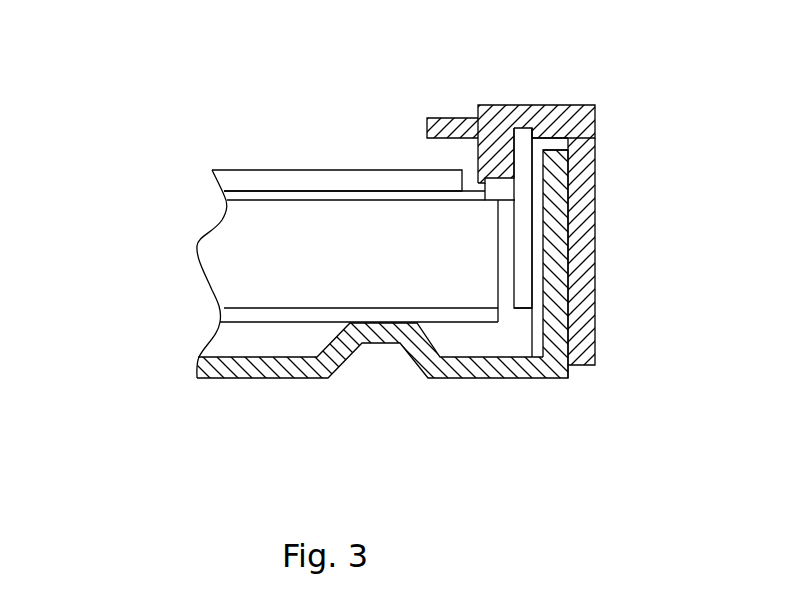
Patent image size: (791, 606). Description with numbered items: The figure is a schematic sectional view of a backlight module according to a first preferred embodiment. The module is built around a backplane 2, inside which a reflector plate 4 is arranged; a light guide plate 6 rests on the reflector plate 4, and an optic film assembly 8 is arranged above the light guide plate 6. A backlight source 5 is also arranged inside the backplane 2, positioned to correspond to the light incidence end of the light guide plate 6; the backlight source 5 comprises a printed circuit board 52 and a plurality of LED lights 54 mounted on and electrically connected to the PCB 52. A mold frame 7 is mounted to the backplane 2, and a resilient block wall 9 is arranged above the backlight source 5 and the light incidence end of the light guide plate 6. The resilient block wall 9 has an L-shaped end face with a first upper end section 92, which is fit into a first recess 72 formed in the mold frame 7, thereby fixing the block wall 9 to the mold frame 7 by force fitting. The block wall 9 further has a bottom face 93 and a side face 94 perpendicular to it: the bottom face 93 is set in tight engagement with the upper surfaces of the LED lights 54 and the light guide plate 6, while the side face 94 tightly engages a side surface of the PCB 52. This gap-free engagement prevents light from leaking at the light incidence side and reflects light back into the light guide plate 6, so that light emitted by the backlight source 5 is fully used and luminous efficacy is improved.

The backplane 2 is at (305, 365).
The reflector plate 4 is at (288, 317).
The backlight source 5 is at (530, 310).
The light guide plate 6 is at (237, 258).
The mold frame 7 is at (595, 121).
The optic film assembly 8 is at (318, 178).
The resilient block wall 9 is at (512, 135).
The printed circuit board 52 is at (588, 325).
The LED lights 54 is at (523, 280).
The first recess 72 is at (517, 128).
The first upper end section 92 is at (523, 158).
The bottom face 93 is at (515, 200).
The side face 94 is at (532, 178).